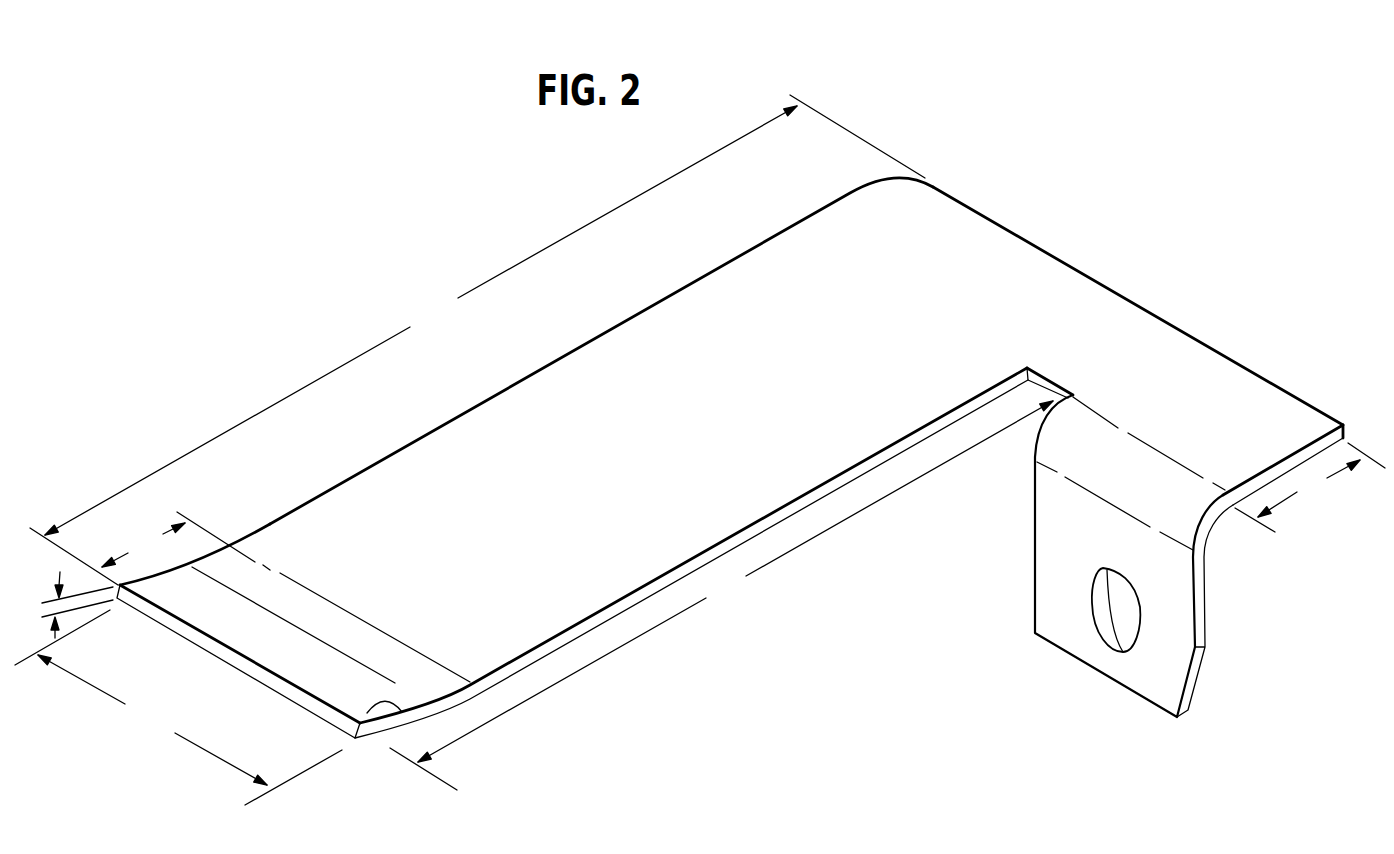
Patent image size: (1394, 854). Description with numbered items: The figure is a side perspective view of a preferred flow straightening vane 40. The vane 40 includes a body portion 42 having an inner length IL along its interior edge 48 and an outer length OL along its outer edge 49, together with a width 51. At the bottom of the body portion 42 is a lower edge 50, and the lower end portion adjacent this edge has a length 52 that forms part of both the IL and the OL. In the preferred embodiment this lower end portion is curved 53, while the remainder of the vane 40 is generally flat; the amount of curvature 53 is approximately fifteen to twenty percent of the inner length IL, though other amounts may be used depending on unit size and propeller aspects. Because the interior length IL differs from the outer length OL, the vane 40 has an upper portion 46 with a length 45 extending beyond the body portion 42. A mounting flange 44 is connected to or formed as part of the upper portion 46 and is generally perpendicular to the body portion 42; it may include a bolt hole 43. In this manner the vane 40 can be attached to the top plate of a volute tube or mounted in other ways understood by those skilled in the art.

The flow straightening vane 40 is at (637, 287).
The body portion 42 is at (457, 428).
The bolt hole 43 is at (1110, 642).
The mounting flange 44 is at (1200, 626).
The length of upper portion 45 is at (1304, 478).
The upper portion 46 is at (1128, 302).
The interior edge 48 is at (357, 474).
The outer edge 49 is at (555, 645).
The lower edge 50 is at (265, 670).
The width 51 is at (178, 707).
The lower end portion length 52 is at (250, 597).
The curvature 53 is at (402, 712).